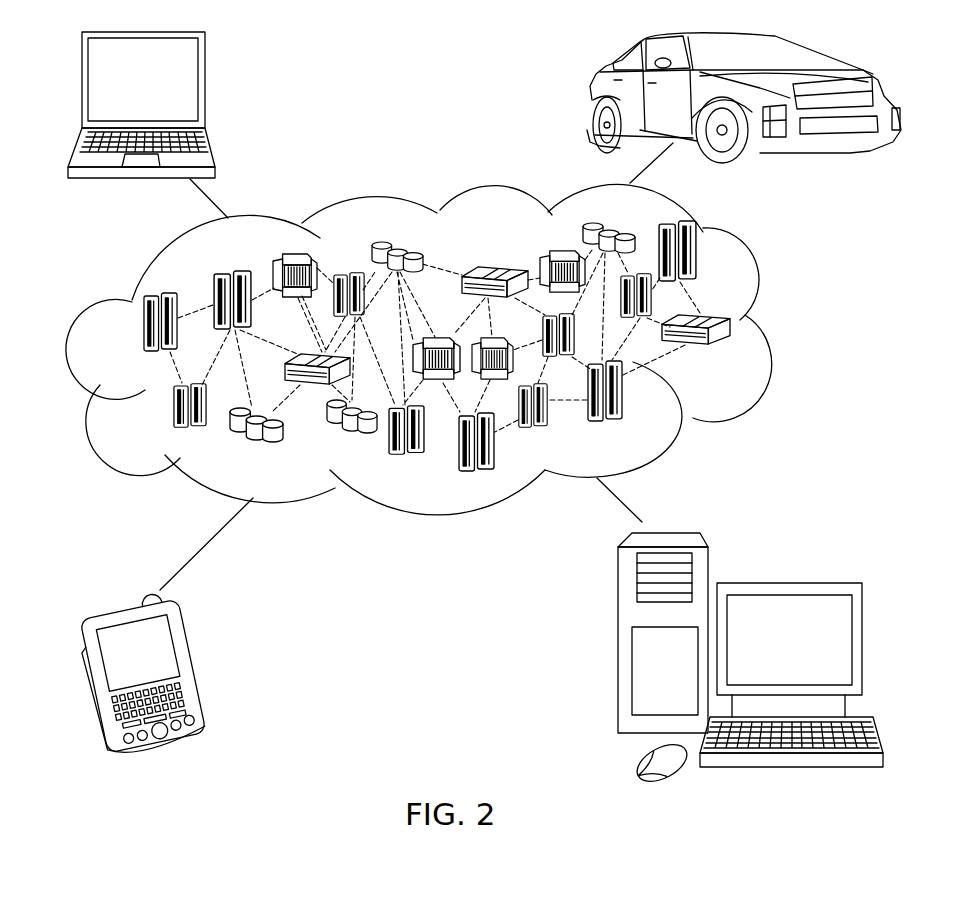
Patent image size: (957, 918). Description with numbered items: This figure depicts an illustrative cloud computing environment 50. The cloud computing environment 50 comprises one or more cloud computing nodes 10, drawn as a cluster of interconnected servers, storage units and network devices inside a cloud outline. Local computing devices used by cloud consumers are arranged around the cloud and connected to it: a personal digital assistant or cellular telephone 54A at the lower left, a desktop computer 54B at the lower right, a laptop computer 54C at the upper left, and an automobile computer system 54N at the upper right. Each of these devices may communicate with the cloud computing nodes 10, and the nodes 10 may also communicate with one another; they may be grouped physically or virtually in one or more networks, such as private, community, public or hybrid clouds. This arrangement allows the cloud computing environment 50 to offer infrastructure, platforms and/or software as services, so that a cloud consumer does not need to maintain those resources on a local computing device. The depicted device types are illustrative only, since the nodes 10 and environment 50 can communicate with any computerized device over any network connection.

The cloud computing nodes 10 is at (742, 358).
The cloud computing environment 50 is at (783, 327).
The personal digital assistant or cellular telephone 54A is at (197, 666).
The desktop computer 54B is at (787, 582).
The laptop computer 54C is at (205, 84).
The automobile computer system 54N is at (592, 98).